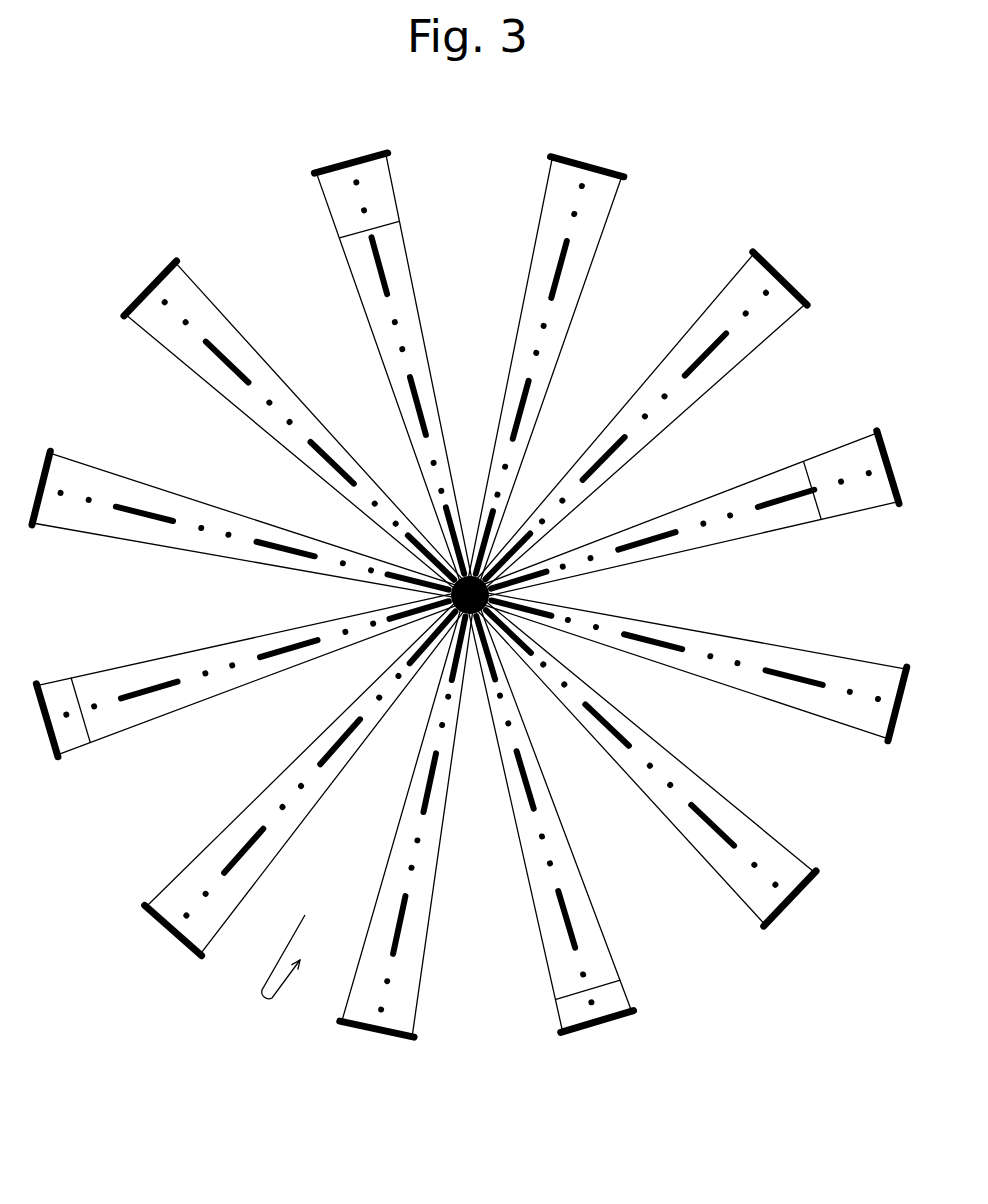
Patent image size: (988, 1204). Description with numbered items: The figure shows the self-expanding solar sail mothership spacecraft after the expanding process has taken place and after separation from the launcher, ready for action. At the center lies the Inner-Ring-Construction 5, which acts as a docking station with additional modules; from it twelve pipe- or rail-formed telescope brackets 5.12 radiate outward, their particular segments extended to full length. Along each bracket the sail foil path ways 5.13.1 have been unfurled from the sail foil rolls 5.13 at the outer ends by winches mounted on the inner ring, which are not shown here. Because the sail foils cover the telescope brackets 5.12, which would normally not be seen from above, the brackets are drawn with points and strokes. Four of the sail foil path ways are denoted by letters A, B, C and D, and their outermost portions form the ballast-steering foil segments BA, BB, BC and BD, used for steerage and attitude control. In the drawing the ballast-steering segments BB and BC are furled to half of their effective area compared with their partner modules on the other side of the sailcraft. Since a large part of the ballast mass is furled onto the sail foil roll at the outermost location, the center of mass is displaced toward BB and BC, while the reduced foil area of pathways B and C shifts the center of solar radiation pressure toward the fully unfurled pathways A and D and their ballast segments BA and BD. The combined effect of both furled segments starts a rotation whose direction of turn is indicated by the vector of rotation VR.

The Inner-Ring-Construction 5 is at (489, 593).
The telescope brackets 5.12 is at (697, 358).
The sail foil rolls 5.13 is at (621, 357).
The sail foil path ways 5.13.1 is at (723, 298).
The sail foil pathway A is at (403, 227).
The sail foil pathway B is at (602, 918).
The sail foil pathway C is at (98, 668).
The sail foil pathway D is at (805, 527).
The ballast-steering foil segment of pathway A BA is at (337, 201).
The ballast-steering foil segment of pathway B BB is at (570, 1007).
The ballast-steering foil segment of pathway C BC is at (72, 732).
The ballast-steering foil segment of pathway D BD is at (842, 460).
The vector of rotation VR is at (298, 943).